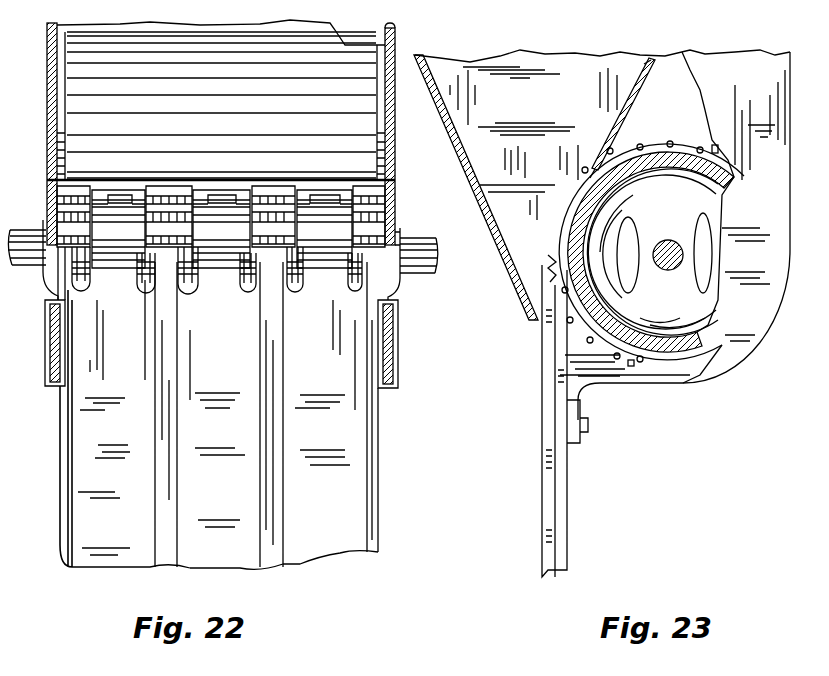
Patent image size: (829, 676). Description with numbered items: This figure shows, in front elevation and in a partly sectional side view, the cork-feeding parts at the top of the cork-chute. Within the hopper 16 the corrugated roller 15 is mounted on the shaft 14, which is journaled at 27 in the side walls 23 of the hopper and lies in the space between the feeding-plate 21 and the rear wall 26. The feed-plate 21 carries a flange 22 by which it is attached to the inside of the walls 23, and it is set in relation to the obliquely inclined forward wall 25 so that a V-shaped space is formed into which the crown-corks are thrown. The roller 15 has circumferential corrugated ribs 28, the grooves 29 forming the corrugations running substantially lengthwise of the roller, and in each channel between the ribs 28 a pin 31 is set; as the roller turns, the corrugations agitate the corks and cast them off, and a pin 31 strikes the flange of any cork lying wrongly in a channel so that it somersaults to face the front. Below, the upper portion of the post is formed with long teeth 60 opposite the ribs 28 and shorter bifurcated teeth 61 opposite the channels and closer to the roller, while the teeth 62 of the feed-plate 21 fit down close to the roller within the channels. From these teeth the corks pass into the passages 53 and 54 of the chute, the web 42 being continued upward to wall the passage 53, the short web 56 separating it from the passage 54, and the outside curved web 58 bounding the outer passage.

In FIG. 22, the shaft 14 is at (26, 229).
In FIG. 23, the shaft 14 is at (668, 270).
In FIG. 23, the corrugated roller 15 is at (651, 258).
In FIG. 23, the hopper 16 is at (602, 213).
In FIG. 22, the feeding-plate 21 is at (221, 100).
In FIG. 23, the feeding-plate 21 is at (638, 88).
In FIG. 23, the flange 22 is at (640, 79).
In FIG. 22, the walls of the hopper 23 is at (45, 130).
In FIG. 23, the forward wall 25 is at (466, 168).
In FIG. 23, the rear wall 26 is at (776, 320).
In FIG. 22, the journal 27 is at (406, 232).
In FIG. 22, the corrugated ribs 28 is at (221, 216).
In FIG. 22, the grooves 29 is at (222, 229).
In FIG. 23, the pin 31 is at (688, 147).
In FIG. 22, the web 42 is at (378, 503).
In FIG. 22, the passage 53 is at (319, 414).
In FIG. 22, the passage 54 is at (214, 415).
In FIG. 22, the short web 56 is at (131, 434).
In FIG. 22, the outside curved web 58 is at (62, 482).
In FIG. 22, the long teeth 60 is at (220, 260).
In FIG. 23, the long teeth 60 is at (540, 295).
In FIG. 22, the bifurcated teeth 61 is at (192, 273).
In FIG. 23, the bifurcated teeth 61 is at (548, 312).
In FIG. 23, the teeth 62 is at (545, 260).